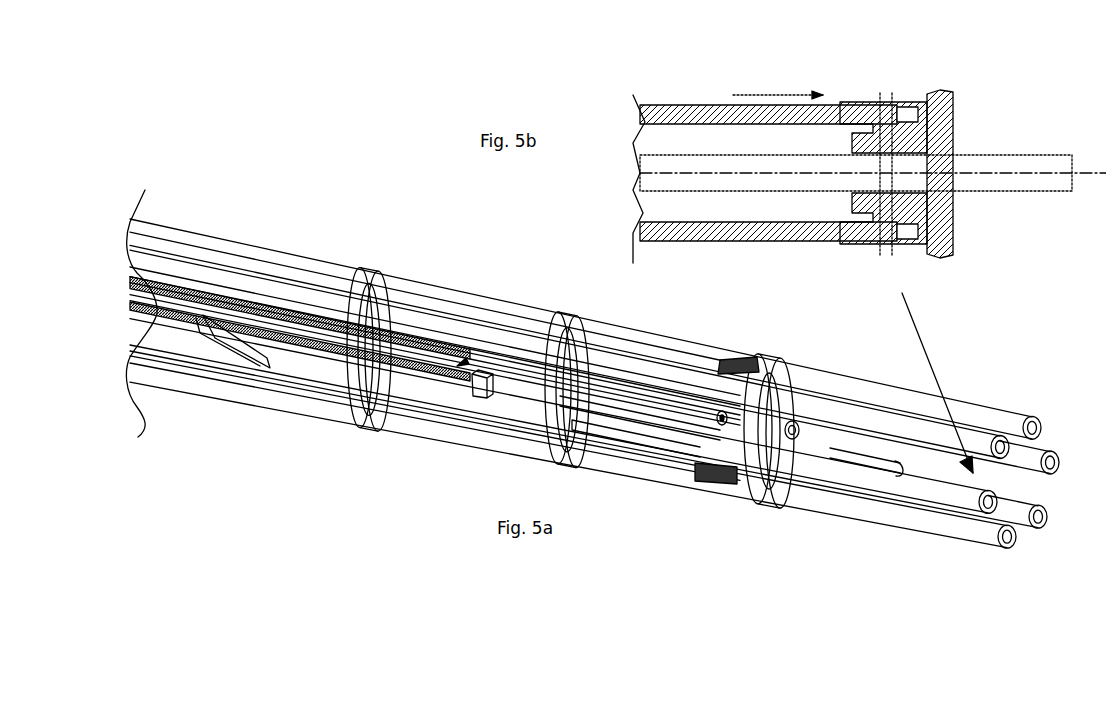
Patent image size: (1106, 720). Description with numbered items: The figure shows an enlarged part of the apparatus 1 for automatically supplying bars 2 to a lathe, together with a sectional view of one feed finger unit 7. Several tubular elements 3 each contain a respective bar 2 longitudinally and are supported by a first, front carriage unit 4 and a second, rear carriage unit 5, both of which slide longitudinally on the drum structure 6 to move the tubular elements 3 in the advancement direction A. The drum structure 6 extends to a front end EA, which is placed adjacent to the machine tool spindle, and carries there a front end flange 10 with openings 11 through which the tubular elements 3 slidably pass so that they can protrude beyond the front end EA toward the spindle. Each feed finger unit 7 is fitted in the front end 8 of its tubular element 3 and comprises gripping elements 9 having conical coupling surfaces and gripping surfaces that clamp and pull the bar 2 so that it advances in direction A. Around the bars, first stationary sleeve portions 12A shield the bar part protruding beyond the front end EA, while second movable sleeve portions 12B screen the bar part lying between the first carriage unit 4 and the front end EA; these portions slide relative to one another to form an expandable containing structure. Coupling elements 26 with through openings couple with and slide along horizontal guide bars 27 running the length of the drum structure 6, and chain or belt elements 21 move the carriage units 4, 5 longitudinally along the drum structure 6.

In FIG. 5a, the apparatus 1 is at (290, 530).
In FIG. 5a, the bar 2 is at (512, 390).
In FIG. 5b, the bar 2 is at (1023, 163).
In FIG. 5a, the tubular element 3 is at (922, 492).
In FIG. 5b, the tubular element 3 is at (683, 110).
In FIG. 5a, the first carriage unit 4 is at (583, 322).
In FIG. 5a, the second carriage unit 5 is at (373, 273).
In FIG. 5a, the drum structure 6 is at (237, 310).
In FIG. 5a, the feed finger unit 7 is at (1031, 403).
In FIG. 5b, the feed finger unit 7 is at (937, 65).
In FIG. 5a, the front end of the tubular element 8 is at (980, 550).
In FIG. 5b, the gripping elements 9 is at (865, 140).
In FIG. 5a, the front end flange 10 is at (755, 525).
In FIG. 5a, the openings 11 is at (773, 378).
In FIG. 5a, the first stationary sleeve portions 12A is at (855, 467).
In FIG. 5a, the second movable sleeve portions 12B is at (637, 443).
In FIG. 5a, the chain or belt elements 21 is at (705, 470).
In FIG. 5a, the coupling elements 26 is at (323, 330).
In FIG. 5a, the horizontal guide bars 27 is at (173, 282).
In FIG. 5a, the advancement direction A is at (466, 358).
In FIG. 5a, the front end EA is at (760, 525).